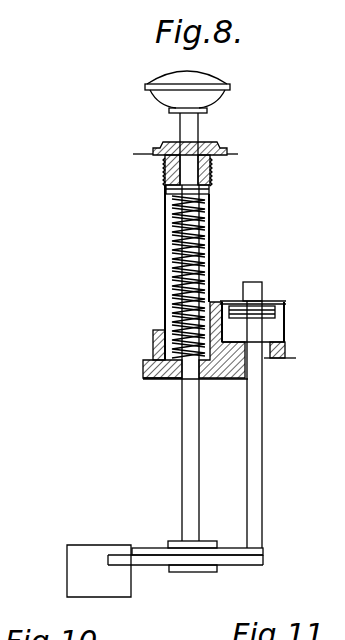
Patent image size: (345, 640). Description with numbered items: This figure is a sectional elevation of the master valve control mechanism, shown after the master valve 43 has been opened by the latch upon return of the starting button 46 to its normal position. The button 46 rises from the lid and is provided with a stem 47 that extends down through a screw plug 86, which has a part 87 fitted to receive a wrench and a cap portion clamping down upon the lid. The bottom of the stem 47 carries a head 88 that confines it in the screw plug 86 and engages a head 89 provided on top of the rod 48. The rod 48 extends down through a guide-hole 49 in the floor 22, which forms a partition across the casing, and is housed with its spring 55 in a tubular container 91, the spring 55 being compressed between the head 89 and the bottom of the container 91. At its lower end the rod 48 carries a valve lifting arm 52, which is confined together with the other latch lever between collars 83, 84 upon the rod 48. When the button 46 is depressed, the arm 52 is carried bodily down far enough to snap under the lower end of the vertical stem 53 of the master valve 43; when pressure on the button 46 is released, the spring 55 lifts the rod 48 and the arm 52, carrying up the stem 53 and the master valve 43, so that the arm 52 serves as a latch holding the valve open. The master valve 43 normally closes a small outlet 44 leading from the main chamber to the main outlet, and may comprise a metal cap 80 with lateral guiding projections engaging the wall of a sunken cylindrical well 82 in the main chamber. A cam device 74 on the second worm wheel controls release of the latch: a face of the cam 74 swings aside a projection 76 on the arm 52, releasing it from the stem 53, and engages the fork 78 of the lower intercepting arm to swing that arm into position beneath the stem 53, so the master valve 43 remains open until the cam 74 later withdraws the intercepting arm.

The button 46 is at (209, 83).
The stem 47 is at (196, 134).
The wrench part 87 is at (164, 146).
The head 88 is at (166, 177).
The screw plug 86 is at (210, 164).
The head 89 is at (170, 193).
The spring 55 is at (207, 208).
The floor 22 is at (205, 380).
The tubular container 91 is at (158, 344).
The guide-hole 49 is at (168, 380).
The rod 48 is at (186, 432).
The metal cap 80 is at (268, 300).
The master valve 43 is at (276, 312).
The sunken cylindrical well 82 is at (285, 334).
The small outlet 44 is at (263, 356).
The vertical stem 53 is at (255, 467).
The collar 83 is at (210, 540).
The valve lifting arm 52 is at (223, 552).
The projection 76 is at (139, 550).
The fork 78 is at (137, 562).
The collar 84 is at (190, 573).
The cam device 74 is at (67, 560).